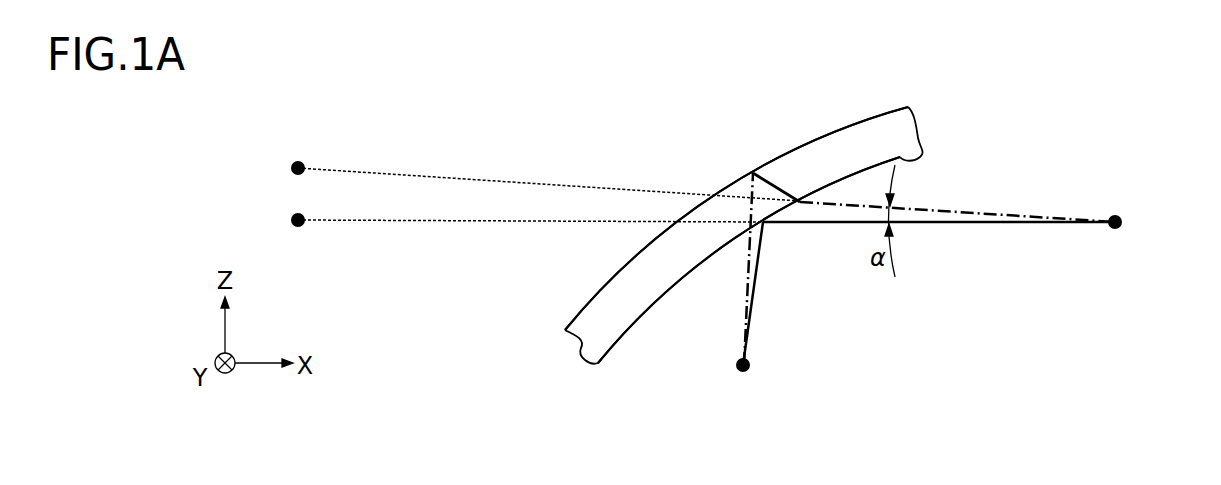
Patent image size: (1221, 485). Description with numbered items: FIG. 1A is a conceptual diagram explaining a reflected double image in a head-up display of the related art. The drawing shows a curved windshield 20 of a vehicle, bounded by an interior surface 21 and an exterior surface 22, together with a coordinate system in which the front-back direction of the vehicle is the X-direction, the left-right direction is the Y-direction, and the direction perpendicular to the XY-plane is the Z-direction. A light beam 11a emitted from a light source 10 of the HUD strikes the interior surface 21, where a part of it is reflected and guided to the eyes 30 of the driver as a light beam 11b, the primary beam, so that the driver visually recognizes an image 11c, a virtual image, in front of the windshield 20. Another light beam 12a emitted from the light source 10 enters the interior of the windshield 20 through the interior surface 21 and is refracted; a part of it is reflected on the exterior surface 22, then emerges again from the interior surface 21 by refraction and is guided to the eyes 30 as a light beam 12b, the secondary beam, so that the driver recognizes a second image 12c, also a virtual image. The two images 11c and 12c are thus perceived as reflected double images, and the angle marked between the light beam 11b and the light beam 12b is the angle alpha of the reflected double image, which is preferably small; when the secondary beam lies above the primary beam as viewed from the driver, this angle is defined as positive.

The light source 10 is at (734, 368).
The light beam 11a is at (756, 272).
The light beam (primary beam) 11b is at (930, 224).
The image (virtual image) 11c is at (292, 218).
The light beam 12a is at (745, 262).
The light beam (secondary beam) 12b is at (943, 207).
The image (virtual image) 12c is at (292, 166).
The windshield 20 is at (900, 130).
The interior surface 21 is at (921, 165).
The exterior surface 22 is at (827, 128).
The eyes 30 is at (1120, 217).